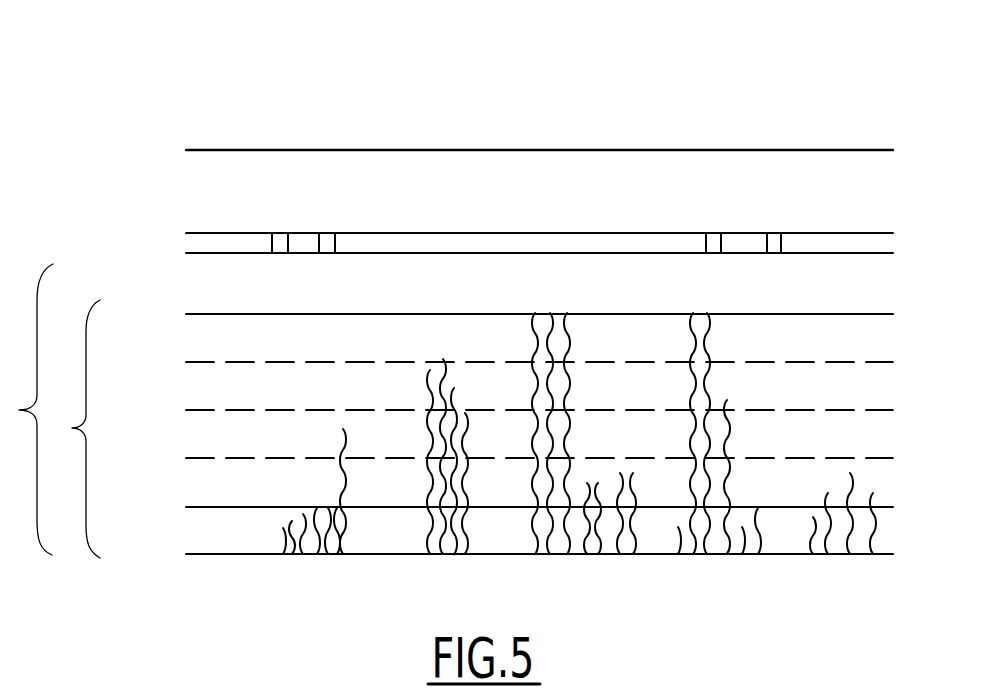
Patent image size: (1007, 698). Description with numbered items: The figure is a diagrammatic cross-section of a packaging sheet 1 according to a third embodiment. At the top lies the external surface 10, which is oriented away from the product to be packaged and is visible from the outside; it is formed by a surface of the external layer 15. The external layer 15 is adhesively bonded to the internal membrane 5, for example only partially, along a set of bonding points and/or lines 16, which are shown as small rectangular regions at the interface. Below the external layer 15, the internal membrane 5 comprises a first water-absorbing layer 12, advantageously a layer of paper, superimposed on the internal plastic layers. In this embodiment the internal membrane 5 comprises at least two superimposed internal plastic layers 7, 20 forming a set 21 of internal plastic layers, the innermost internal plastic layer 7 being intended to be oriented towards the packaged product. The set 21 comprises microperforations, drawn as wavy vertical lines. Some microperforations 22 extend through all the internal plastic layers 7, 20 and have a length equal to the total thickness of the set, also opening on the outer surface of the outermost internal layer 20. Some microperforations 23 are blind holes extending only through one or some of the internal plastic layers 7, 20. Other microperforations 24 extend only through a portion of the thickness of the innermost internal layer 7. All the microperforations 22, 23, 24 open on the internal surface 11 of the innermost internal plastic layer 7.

The packaging sheet 1 is at (215, 97).
The internal membrane 5 is at (34, 409).
The internal plastic layer 7 is at (203, 533).
The external surface 10 is at (302, 148).
The internal surface 11 is at (237, 556).
The first water-absorbing layer 12 is at (203, 286).
The external layer 15 is at (203, 205).
The bonding points and/or lines 16 is at (272, 244).
The internal plastic layer 20 is at (203, 337).
The set of internal plastic layers 21 is at (73, 429).
The microperforations 22 is at (535, 559).
The microperforations 23 is at (315, 559).
The microperforations 24 is at (277, 559).